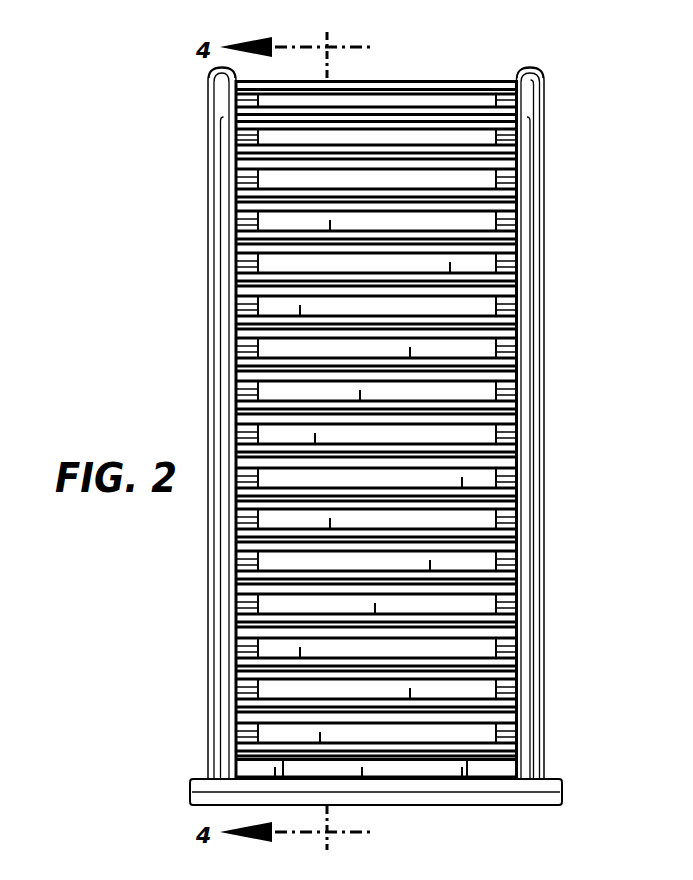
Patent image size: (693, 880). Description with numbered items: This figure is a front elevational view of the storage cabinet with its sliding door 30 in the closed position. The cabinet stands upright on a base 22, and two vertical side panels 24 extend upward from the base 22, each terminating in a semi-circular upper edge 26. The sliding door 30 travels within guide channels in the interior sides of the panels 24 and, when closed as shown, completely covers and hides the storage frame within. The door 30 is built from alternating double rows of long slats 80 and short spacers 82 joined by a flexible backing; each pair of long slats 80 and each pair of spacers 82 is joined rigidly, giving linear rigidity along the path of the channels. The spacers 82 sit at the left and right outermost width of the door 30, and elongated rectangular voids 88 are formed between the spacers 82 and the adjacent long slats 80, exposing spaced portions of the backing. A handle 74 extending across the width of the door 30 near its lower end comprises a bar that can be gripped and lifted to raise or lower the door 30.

The base 22 is at (463, 805).
The vertical side panels 24 is at (208, 397).
The semi-circular upper edges 26 is at (220, 65).
The sliding door 30 is at (477, 433).
The handle 74 is at (514, 745).
The long slats 80 is at (513, 532).
The short spacers 82 is at (514, 550).
The rectangular voids 88 is at (473, 603).